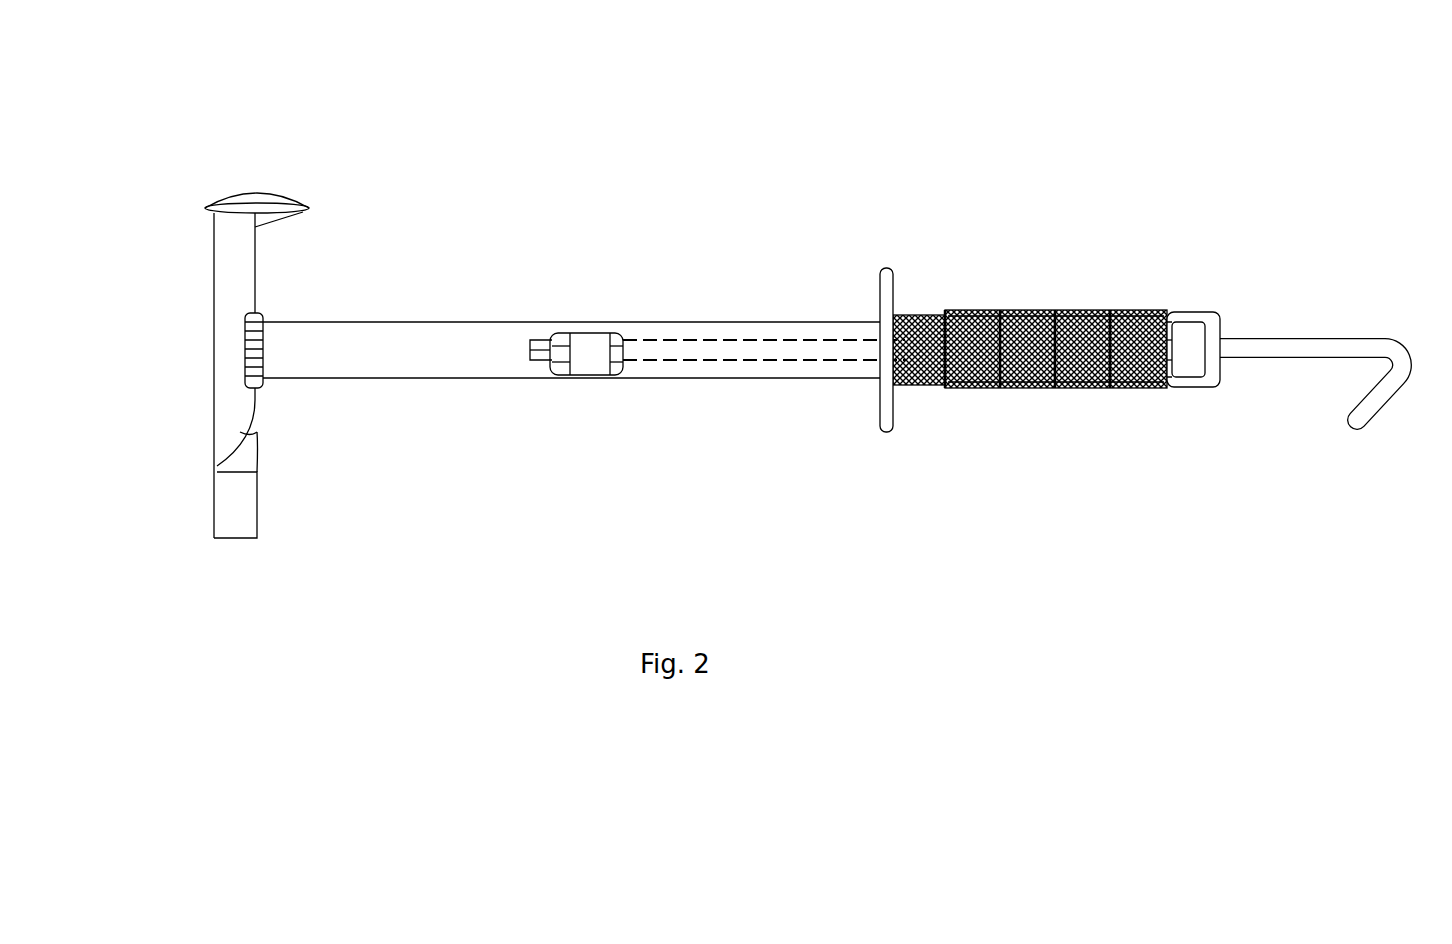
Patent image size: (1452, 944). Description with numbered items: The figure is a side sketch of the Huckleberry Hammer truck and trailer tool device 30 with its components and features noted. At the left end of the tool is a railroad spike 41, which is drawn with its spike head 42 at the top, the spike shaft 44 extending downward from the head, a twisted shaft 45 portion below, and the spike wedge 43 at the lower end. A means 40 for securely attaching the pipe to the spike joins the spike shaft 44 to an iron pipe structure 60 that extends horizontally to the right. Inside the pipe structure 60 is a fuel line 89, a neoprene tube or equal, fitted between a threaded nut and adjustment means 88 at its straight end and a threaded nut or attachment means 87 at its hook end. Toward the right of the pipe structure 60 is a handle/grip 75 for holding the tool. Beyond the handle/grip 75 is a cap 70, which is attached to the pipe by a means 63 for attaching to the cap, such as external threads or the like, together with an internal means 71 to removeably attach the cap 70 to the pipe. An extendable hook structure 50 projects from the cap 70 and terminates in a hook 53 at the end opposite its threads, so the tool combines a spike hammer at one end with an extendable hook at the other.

The truck and trailer tool device 30 is at (477, 617).
The railroad spike 41 is at (153, 237).
The spike head 42 is at (277, 185).
The spike shaft 44 is at (208, 330).
The means for securely attaching pipe to spike 40 is at (262, 312).
The twisted shaft 45 is at (225, 448).
The spike wedge 43 is at (227, 515).
The iron pipe structure 60 is at (538, 323).
The threaded nut or attachment means 87 is at (618, 378).
The threaded nut and adjustment means 88 is at (552, 356).
The fuel line 89 is at (580, 376).
The handle/grip 75 is at (1063, 312).
The extendable hook structure 50 is at (1345, 337).
The hook 53 is at (1382, 415).
The cap 70 is at (1213, 383).
The means for attaching to cap 63 is at (1160, 377).
The internal means to removeably attach cap to pipe 71 is at (1169, 349).